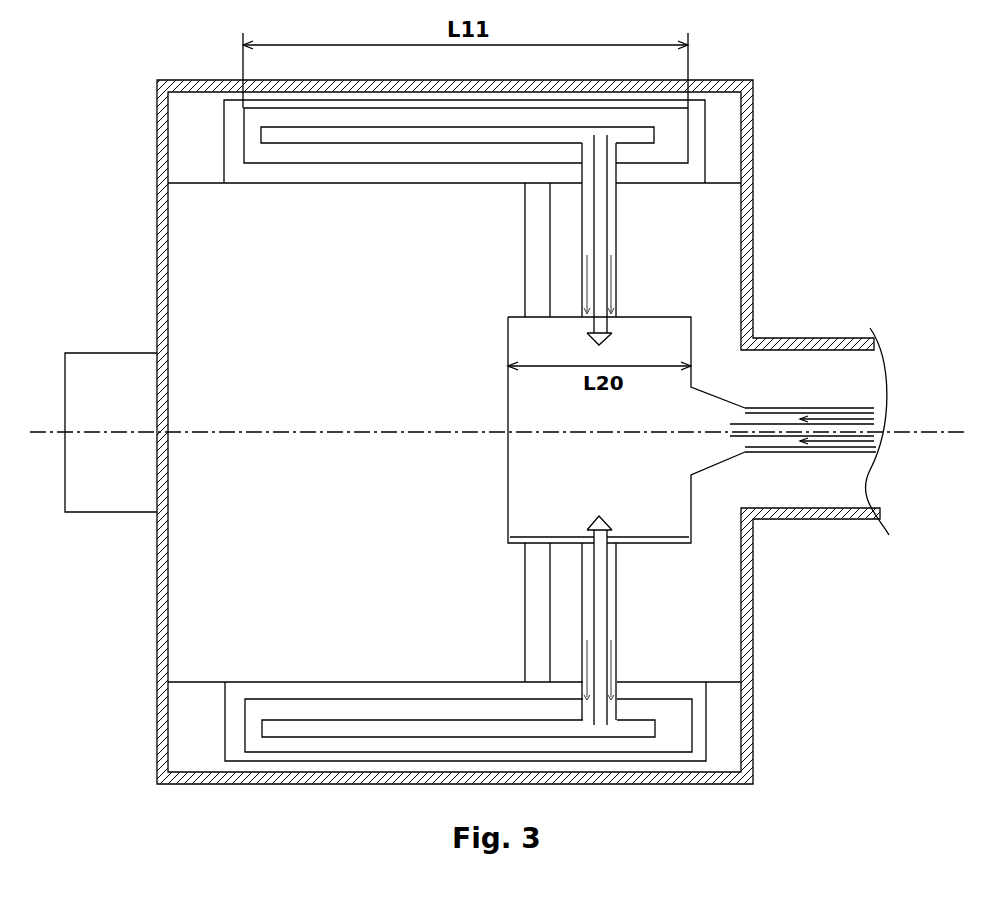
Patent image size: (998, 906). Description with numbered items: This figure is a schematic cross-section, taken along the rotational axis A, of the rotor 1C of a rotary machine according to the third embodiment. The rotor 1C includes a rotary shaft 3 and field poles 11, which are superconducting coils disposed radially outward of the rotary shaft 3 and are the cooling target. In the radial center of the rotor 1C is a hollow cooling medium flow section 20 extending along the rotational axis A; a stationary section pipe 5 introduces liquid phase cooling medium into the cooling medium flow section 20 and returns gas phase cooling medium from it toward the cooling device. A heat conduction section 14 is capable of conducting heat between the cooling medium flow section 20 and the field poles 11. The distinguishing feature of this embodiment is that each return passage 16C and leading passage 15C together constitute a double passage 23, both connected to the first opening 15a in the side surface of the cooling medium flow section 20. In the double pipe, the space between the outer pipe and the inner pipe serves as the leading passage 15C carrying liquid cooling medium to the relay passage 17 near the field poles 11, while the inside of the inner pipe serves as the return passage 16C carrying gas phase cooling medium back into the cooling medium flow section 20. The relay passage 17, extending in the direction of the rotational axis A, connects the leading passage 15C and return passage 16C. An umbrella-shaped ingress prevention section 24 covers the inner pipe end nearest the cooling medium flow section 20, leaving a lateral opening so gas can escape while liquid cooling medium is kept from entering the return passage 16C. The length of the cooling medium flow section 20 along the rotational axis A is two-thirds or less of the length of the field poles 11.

The rotor 1C is at (778, 93).
The rotary shaft 3 is at (97, 353).
The stationary section pipe 5 is at (819, 449).
The field pole 11 is at (683, 140).
The heat conduction section 14 is at (538, 250).
The leading passage 15C is at (610, 208).
The first opening 15a is at (609, 326).
The return passage 16C is at (600, 250).
The relay passage 17 is at (386, 135).
The cooling medium flow section 20 is at (607, 474).
The double passage 23 is at (625, 288).
The ingress prevention section 24 is at (590, 338).
The rotational axis A is at (945, 430).